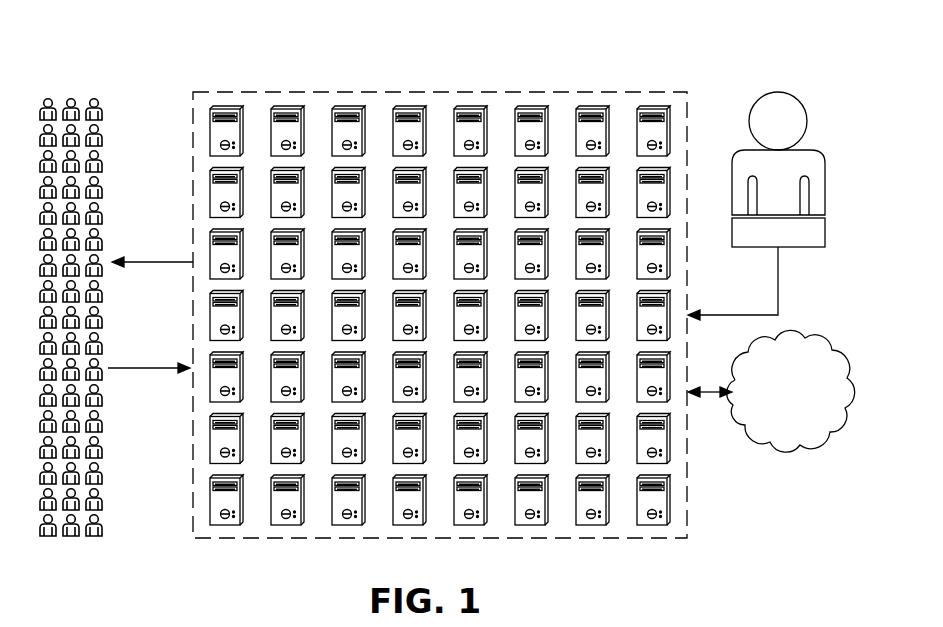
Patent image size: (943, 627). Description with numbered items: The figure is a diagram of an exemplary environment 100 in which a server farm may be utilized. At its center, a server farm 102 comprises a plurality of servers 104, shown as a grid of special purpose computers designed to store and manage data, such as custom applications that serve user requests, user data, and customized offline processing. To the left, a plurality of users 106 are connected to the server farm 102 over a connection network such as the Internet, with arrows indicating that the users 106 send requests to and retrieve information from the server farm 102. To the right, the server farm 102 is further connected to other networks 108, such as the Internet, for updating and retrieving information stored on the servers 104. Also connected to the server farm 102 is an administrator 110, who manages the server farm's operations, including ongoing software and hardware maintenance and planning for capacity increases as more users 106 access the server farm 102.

The environment 100 is at (165, 55).
The server farm 102 is at (440, 92).
The servers 104 is at (592, 107).
The users 106 is at (103, 132).
The other networks 108 is at (790, 445).
The administrator 110 is at (777, 92).